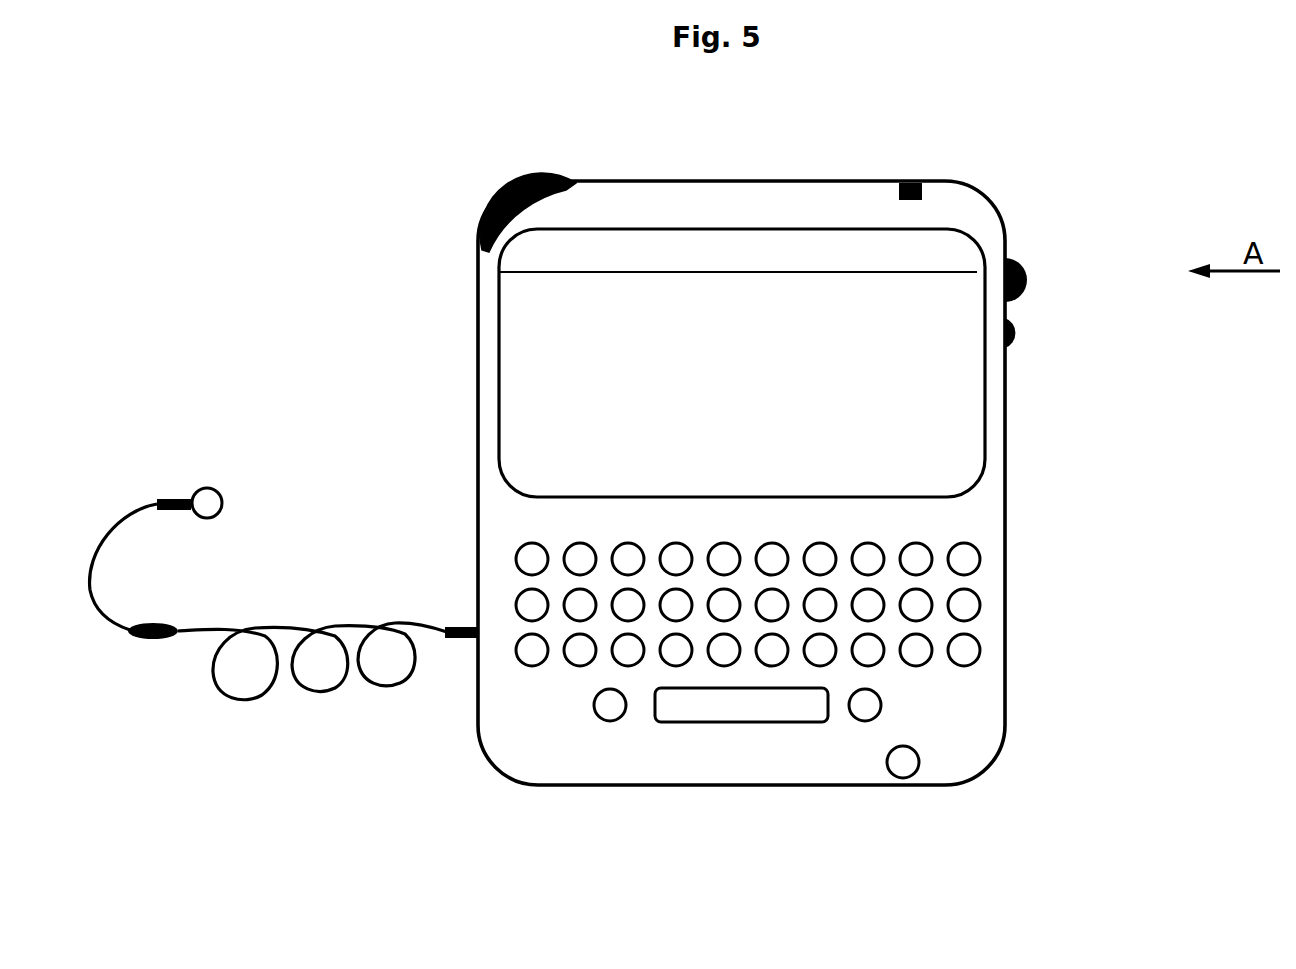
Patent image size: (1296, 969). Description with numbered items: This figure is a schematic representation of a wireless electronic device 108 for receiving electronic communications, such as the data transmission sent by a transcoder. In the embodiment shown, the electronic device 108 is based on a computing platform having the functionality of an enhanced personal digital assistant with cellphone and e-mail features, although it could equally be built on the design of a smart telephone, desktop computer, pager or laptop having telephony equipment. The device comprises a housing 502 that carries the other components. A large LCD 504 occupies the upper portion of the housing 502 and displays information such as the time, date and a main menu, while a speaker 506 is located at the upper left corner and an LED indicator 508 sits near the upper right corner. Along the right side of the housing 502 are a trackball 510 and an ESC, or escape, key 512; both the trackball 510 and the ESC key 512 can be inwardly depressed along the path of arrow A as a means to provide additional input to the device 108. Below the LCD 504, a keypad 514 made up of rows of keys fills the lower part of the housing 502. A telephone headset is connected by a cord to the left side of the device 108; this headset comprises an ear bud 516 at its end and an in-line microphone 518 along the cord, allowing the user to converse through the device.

The electronic device 108 is at (771, 538).
The housing 502 is at (945, 762).
The LCD 504 is at (503, 484).
The speaker 506 is at (500, 207).
The LED indicator 508 is at (922, 190).
The trackball 510 is at (1027, 283).
The ESC key 512 is at (1021, 333).
The keypad 514 is at (992, 606).
The ear bud 516 is at (243, 497).
The microphone 518 is at (188, 620).